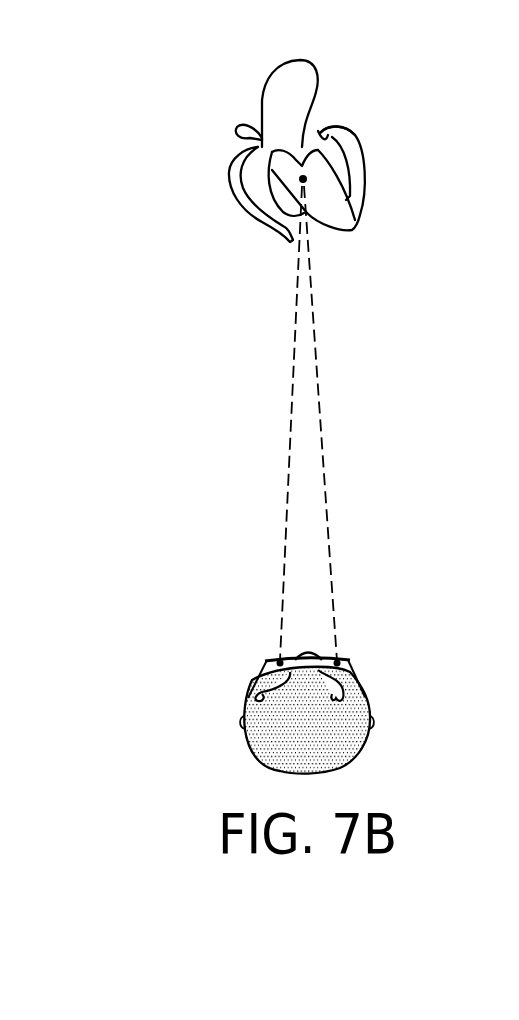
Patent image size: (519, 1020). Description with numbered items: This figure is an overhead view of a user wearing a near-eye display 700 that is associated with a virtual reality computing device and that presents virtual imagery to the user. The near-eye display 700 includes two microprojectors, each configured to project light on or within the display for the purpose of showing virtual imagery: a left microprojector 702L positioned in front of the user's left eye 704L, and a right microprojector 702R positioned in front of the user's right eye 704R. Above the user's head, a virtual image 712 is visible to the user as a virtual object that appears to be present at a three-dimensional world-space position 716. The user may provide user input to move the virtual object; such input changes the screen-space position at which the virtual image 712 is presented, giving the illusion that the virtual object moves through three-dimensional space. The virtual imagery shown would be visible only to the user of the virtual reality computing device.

The three-dimensional world-space position 716 is at (220, 98).
The virtual image 712 is at (337, 125).
The near-eye display 700 is at (312, 598).
The left microprojector 702L is at (280, 658).
The right microprojector 702R is at (338, 658).
The left eye 704L is at (275, 690).
The right eye 704R is at (330, 690).